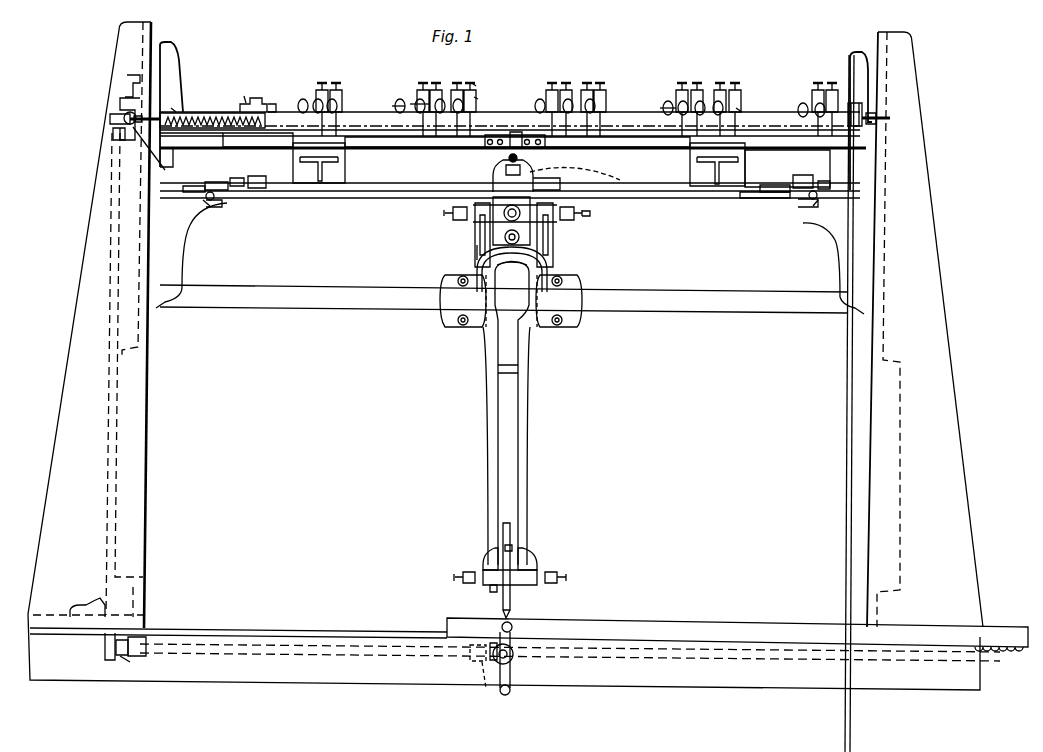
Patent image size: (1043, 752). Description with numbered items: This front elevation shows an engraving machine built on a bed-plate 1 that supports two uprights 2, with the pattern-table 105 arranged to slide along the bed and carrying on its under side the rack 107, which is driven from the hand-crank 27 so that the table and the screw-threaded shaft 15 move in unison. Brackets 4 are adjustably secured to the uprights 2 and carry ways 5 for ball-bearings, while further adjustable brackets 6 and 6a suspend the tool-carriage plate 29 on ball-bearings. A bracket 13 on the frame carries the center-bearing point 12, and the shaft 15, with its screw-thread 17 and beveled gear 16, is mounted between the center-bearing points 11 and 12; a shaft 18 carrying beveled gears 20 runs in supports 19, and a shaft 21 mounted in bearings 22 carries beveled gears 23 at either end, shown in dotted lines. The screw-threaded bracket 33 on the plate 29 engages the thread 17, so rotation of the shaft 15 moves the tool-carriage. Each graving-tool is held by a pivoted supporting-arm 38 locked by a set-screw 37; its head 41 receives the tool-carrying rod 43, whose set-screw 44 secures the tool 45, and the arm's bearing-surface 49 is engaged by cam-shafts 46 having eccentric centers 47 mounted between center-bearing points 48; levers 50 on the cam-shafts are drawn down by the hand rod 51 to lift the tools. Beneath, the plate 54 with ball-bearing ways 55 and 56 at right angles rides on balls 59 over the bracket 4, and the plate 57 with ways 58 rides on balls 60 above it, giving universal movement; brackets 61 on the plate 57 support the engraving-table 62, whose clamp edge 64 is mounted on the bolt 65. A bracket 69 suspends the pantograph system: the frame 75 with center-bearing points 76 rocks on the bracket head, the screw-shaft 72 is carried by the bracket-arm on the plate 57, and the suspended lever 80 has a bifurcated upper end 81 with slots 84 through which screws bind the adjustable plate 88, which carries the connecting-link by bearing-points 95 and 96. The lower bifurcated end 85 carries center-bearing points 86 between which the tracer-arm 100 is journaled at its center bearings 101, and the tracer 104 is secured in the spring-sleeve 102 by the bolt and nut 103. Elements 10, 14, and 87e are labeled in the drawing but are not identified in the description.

The bed-plate 1 is at (605, 690).
The uprights 2 is at (60, 447).
The brackets 4 is at (183, 245).
The ways 5 is at (203, 202).
The adjustable bracket 6 is at (178, 80).
The adjustable bracket 6a is at (853, 70).
The bracket 10 is at (262, 96).
The center-bearing point 11 is at (270, 110).
The center-bearing point 12 is at (118, 113).
The bracket 13 is at (125, 82).
The cross bars 14 is at (314, 310).
The screw-threaded shaft 15 is at (169, 102).
The beveled gear 16 is at (160, 156).
The screw-thread 17 is at (208, 114).
The shaft 18 is at (114, 377).
The supports 19 is at (113, 140).
The beveled gears 20 is at (110, 125).
The shaft 21 is at (205, 648).
The bearings 22 is at (148, 636).
The beveled gears 23 is at (126, 662).
The crank-arm 27 is at (512, 690).
The tool-carriage 29 is at (366, 106).
The screw-threaded bracket 33 is at (237, 86).
The set-screw 37 is at (474, 84).
The pivoted supporting-arm 38 is at (476, 98).
The head 41 is at (317, 92).
The tool-carrying rod 43 is at (415, 103).
The set-screw 44 is at (402, 106).
The tool 45 is at (330, 127).
The cam-shafts 46 is at (782, 111).
The centers 47 is at (191, 133).
The center-bearing points 48 is at (878, 124).
The bearing-surface 49 is at (738, 110).
The levers 50 is at (858, 109).
The rod 51 is at (836, 492).
The plate 54 is at (348, 195).
The ball-bearing ways 55 is at (210, 182).
The ball-bearing ways 56 is at (754, 195).
The plate 57 is at (756, 180).
The ball-bearing ways 58 is at (236, 178).
The balls 59 is at (214, 203).
The balls 60 is at (255, 176).
The brackets 61 is at (338, 160).
The engraving-table 62 is at (399, 142).
The clamp edge 64 is at (503, 158).
The bolt 65 is at (541, 176).
The bracket 69 is at (545, 272).
The screw-shaft 72 is at (523, 165).
The frame 75 is at (525, 233).
The center-bearing points 76 is at (505, 237).
The suspended lever 80 is at (527, 445).
The bifurcated upper end 81 is at (495, 262).
The slots 84 is at (477, 222).
The lower bifurcated end 85 is at (487, 560).
The center-bearing points 86 is at (455, 577).
The lever 87e is at (575, 178).
The adjustable plate 88 is at (477, 248).
The bearing-points 95 is at (507, 209).
The bearing-points 96 is at (603, 208).
The tracer-arm 100 is at (540, 585).
The center bearings 101 is at (494, 588).
The spring-sleeve 102 is at (512, 552).
The bolt and nut 103 is at (500, 553).
The tracer 104 is at (512, 610).
The pattern-table 105 is at (655, 622).
The rack 107 is at (1003, 652).